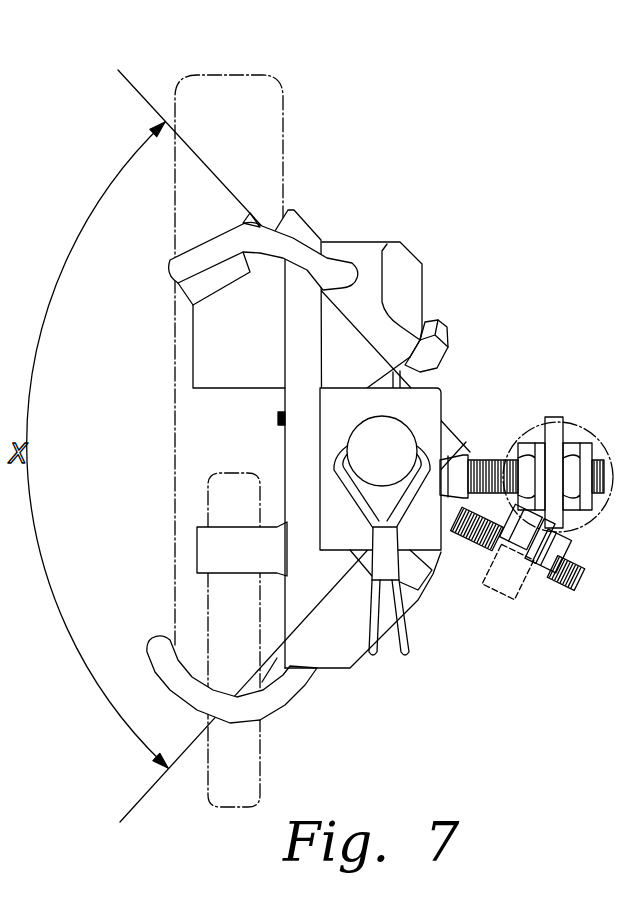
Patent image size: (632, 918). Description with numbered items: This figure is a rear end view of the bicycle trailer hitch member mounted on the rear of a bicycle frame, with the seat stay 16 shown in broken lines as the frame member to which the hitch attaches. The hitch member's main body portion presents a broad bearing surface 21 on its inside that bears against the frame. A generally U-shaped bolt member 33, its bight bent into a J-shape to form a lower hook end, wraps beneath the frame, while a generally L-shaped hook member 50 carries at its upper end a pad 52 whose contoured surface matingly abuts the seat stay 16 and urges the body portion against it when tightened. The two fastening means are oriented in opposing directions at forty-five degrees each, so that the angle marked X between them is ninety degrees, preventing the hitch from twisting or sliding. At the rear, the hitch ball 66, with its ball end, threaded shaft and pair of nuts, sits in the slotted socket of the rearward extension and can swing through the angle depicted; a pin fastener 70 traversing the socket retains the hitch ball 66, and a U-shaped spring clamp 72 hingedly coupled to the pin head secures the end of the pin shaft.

The seat stay 16 is at (168, 440).
The bearing surface 21 is at (287, 600).
The bolt member 33 is at (152, 637).
The hook member 50 is at (277, 231).
The pad 52 is at (205, 240).
The hitch ball 66 is at (472, 448).
The pin fastener 70 is at (402, 433).
The spring clamp 72 is at (410, 640).